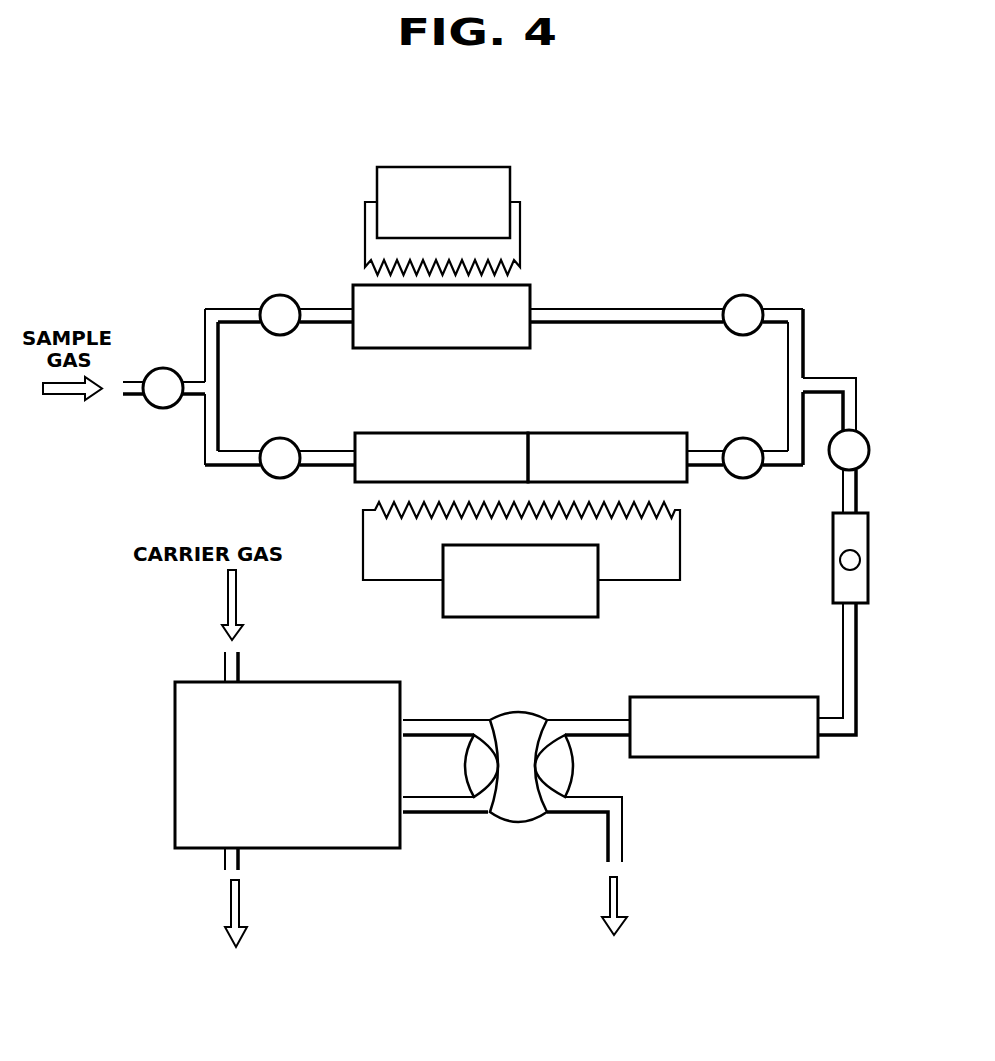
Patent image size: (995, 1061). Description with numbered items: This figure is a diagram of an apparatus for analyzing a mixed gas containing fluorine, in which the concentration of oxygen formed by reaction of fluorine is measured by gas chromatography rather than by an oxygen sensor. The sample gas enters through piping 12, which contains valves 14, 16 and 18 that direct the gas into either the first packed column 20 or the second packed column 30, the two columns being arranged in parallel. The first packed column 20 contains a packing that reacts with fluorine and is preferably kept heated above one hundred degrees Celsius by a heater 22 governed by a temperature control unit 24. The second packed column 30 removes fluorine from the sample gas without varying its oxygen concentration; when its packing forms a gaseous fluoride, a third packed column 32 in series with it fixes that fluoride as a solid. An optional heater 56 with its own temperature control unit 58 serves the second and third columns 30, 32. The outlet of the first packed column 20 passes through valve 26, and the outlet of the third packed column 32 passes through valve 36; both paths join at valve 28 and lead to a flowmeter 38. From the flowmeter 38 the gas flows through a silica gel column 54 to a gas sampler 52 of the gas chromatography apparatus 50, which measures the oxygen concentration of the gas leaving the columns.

The piping 12 is at (237, 308).
The valve 14 is at (165, 368).
The valve 16 is at (280, 295).
The valve 18 is at (280, 438).
The first packed column 20 is at (530, 292).
The heater 22 is at (493, 258).
The temperature control unit 24 is at (480, 167).
The valve 26 is at (743, 295).
The valve 28 is at (865, 437).
The second packed column 30 is at (355, 472).
The third packed column 32 is at (683, 473).
The valve 36 is at (743, 438).
The flowmeter 38 is at (833, 560).
The gas chromatography apparatus 50 is at (372, 680).
The gas sampler 52 is at (525, 712).
The silica gel column 54 is at (752, 697).
The heater 56 is at (625, 510).
The temperature control unit 58 is at (600, 600).